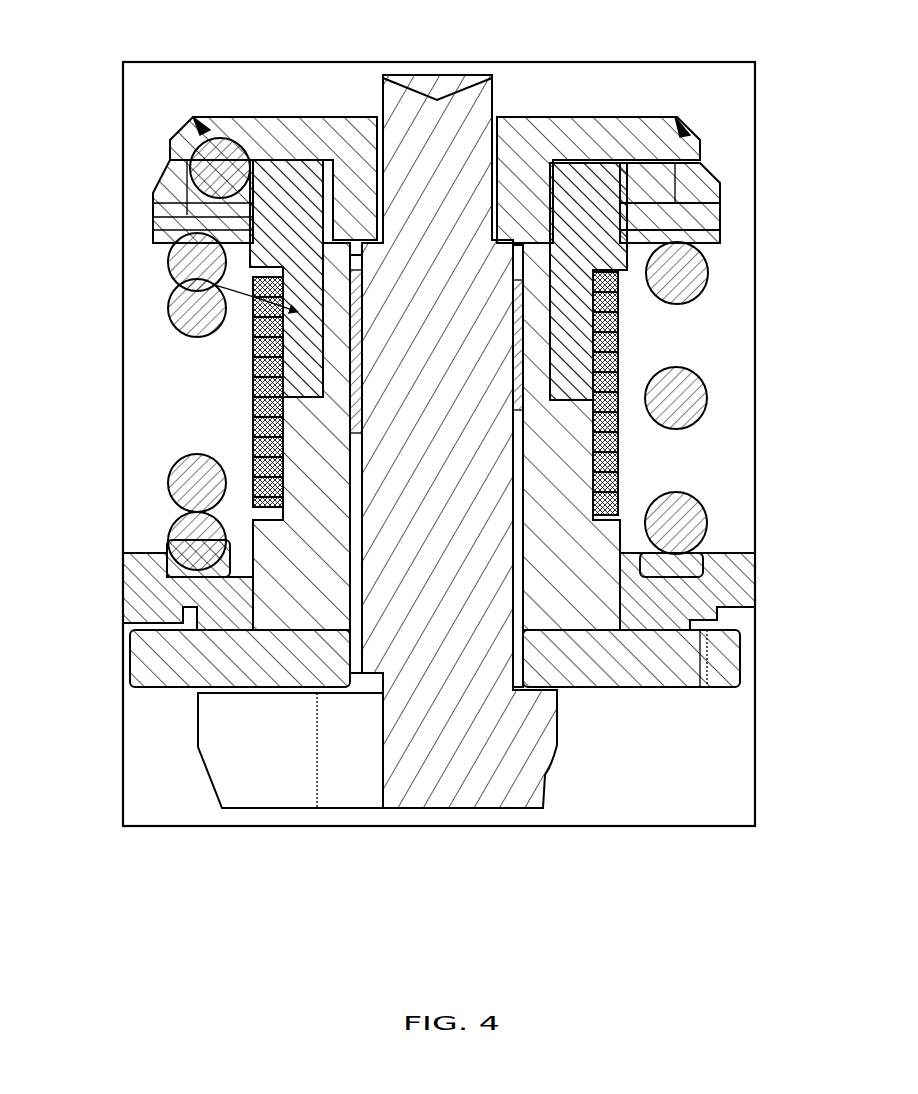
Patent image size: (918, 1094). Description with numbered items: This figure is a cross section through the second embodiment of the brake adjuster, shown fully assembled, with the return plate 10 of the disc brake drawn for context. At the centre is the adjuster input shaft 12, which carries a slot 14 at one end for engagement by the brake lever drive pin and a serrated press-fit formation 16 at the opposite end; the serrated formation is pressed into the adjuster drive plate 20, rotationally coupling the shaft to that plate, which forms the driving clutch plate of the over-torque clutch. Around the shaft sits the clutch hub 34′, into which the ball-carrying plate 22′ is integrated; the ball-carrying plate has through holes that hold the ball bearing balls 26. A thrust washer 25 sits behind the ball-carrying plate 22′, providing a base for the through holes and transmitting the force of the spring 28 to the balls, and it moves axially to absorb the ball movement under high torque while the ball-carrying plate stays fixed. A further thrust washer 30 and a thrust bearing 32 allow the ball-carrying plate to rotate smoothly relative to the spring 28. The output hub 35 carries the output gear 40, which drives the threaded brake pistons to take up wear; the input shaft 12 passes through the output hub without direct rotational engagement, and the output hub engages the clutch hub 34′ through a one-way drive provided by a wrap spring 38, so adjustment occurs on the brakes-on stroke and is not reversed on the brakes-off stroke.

The return plate 10 is at (737, 577).
The adjuster input shaft 12 is at (392, 396).
The slot 14 is at (238, 762).
The serrated press-fit formation 16 is at (483, 160).
The adjuster drive plate 20 is at (565, 136).
The ball-carrying plate 22′ is at (157, 189).
The thrust washer 25 is at (722, 205).
The ball bearing balls 26 is at (192, 170).
The spring 28 is at (708, 405).
The thrust washer 30 is at (722, 240).
The thrust bearing 32 is at (722, 223).
The clutch hub 34′ is at (298, 377).
The output hub 35 is at (565, 464).
The wrap spring 38 is at (622, 327).
The output gear 40 is at (737, 663).